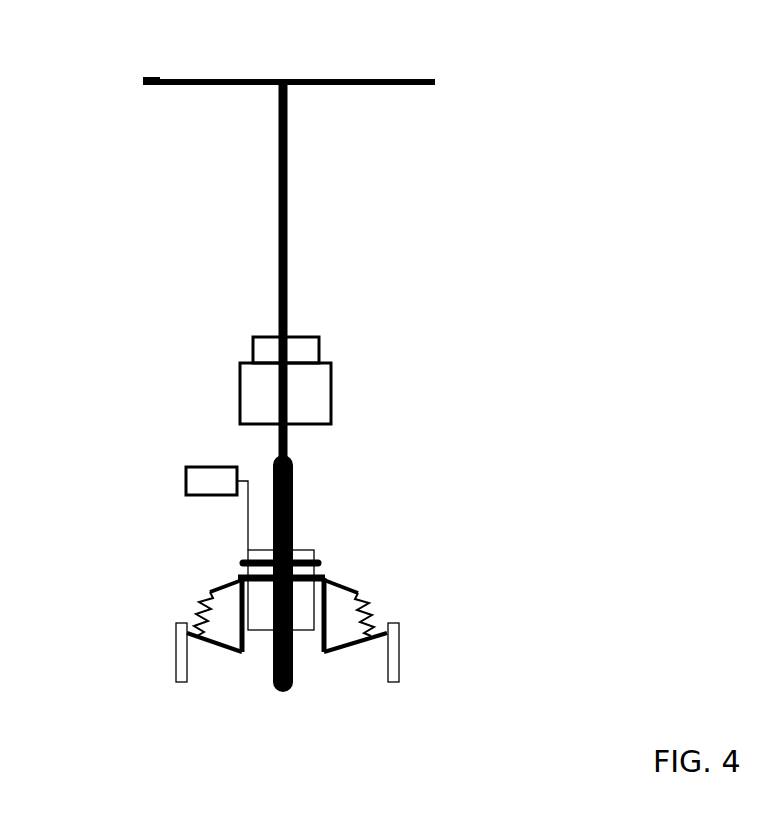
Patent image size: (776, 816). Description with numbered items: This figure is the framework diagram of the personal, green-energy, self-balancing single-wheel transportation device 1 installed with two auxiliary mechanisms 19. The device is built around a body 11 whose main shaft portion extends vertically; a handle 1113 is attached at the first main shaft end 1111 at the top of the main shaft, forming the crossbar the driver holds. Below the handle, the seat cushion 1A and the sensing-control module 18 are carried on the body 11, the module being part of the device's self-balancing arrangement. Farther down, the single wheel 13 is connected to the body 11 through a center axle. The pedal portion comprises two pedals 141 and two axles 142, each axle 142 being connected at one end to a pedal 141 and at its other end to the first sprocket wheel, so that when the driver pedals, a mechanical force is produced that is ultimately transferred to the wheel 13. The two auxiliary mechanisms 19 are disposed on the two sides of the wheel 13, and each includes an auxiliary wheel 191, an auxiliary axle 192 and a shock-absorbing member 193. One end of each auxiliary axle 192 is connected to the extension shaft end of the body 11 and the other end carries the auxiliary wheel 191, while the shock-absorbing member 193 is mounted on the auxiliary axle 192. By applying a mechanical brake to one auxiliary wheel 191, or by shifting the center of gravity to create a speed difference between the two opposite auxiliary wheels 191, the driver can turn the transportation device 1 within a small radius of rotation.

The transportation device 1 is at (666, 65).
The body 11 is at (288, 183).
The first main shaft end 1111 is at (284, 79).
The handle 1113 is at (157, 85).
The seat cushion 1A is at (307, 340).
The sensing-control module 18 is at (271, 359).
The wheel 13 is at (294, 469).
The pedal 141 is at (202, 466).
The axle 142 is at (249, 518).
The auxiliary mechanism 19 is at (297, 624).
The auxiliary wheel 191 is at (174, 665).
The auxiliary axle 192 is at (223, 653).
The shock-absorbing member 193 is at (209, 591).